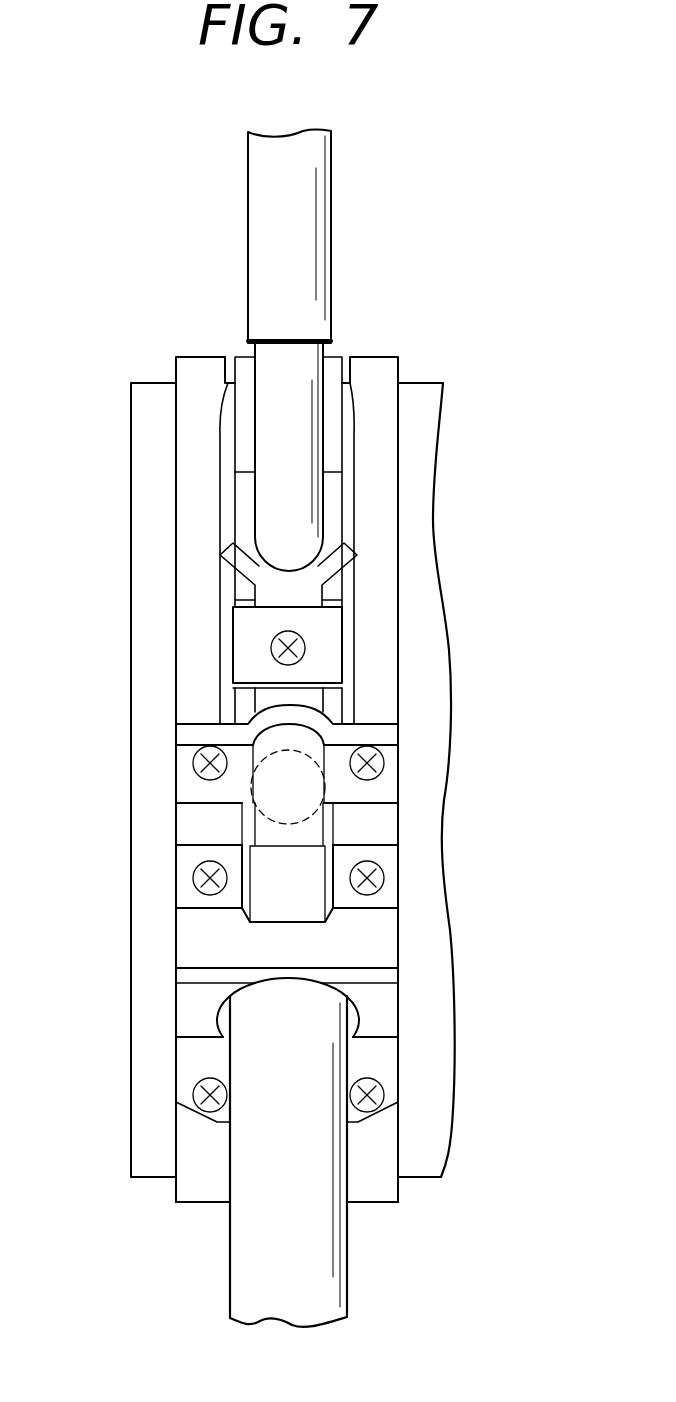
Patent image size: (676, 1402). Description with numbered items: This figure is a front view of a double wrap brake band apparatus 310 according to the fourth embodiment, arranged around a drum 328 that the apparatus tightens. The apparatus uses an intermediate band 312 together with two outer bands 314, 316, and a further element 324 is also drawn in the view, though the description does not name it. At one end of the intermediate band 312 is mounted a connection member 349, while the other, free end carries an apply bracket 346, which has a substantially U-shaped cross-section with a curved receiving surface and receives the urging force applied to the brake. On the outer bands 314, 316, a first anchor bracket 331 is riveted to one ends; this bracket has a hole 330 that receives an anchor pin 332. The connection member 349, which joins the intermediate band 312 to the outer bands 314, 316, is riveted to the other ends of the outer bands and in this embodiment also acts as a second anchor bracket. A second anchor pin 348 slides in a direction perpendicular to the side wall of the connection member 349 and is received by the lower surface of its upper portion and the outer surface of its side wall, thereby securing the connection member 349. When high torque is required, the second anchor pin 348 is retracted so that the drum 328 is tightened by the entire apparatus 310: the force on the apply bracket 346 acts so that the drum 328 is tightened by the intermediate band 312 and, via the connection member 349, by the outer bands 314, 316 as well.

The double wrap brake band apparatus 310 is at (364, 162).
The intermediate band 312 is at (328, 373).
The outer band 314 is at (195, 368).
The outer band 316 is at (392, 373).
The shaft 324 is at (307, 436).
The apply bracket 346 is at (302, 585).
The drum 328 is at (431, 607).
The connection member 349 is at (392, 732).
The second anchor pin 348 is at (280, 780).
The first anchor bracket 331 is at (390, 858).
The hole 330 is at (353, 1018).
The anchor pin 332 is at (330, 1253).